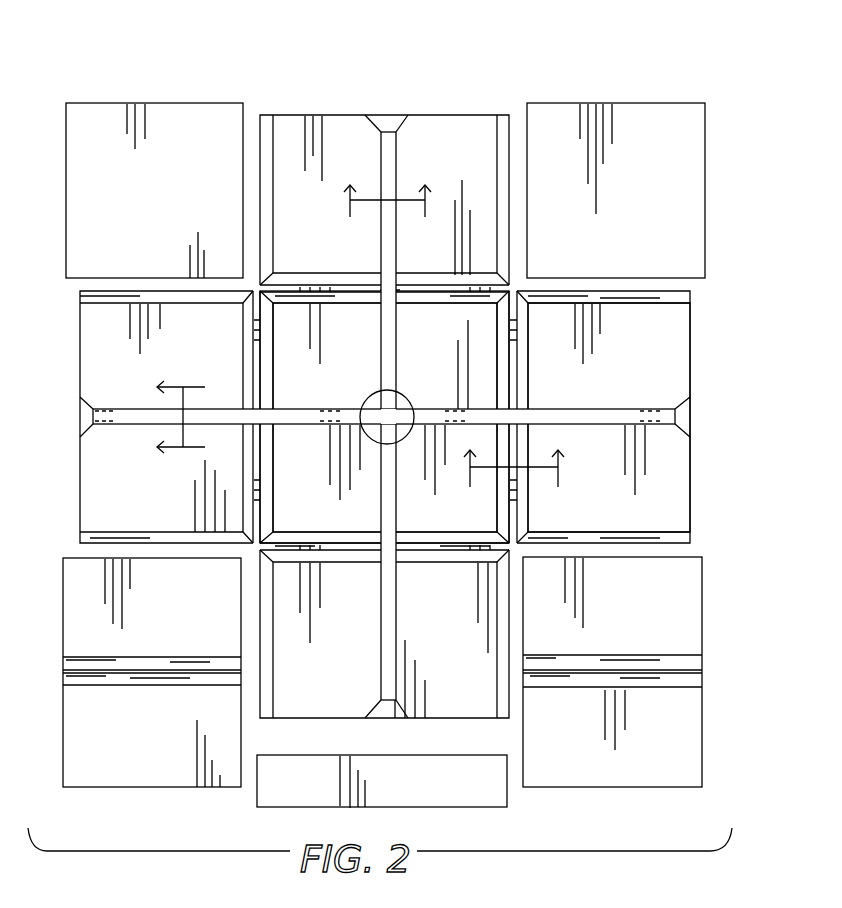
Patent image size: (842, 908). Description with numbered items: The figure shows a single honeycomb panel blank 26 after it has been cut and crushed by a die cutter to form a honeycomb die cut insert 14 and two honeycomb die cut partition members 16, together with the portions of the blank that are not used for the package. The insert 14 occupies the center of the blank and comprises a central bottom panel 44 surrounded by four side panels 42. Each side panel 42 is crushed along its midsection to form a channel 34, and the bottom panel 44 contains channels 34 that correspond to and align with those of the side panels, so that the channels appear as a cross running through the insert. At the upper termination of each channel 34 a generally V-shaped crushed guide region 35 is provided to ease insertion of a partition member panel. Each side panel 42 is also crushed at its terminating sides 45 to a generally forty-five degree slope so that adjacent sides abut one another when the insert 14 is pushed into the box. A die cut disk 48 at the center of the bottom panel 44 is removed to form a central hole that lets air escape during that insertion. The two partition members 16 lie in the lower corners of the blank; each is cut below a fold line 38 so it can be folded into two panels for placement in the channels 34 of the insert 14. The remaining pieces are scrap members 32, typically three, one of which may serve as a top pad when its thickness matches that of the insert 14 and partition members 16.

The honeycomb die cut insert 14 is at (706, 367).
The honeycomb die cut partition member 16 is at (83, 612).
The honeycomb panel blank 26 is at (720, 206).
The scrap member 32 is at (193, 122).
The channel 34 is at (125, 415).
The crushed guide region 35 is at (400, 118).
The fold line 38 is at (165, 672).
The side panel 42 is at (670, 495).
The bottom panel 44 is at (434, 361).
The terminating side 45 is at (503, 125).
The die cut disk 48 is at (373, 405).